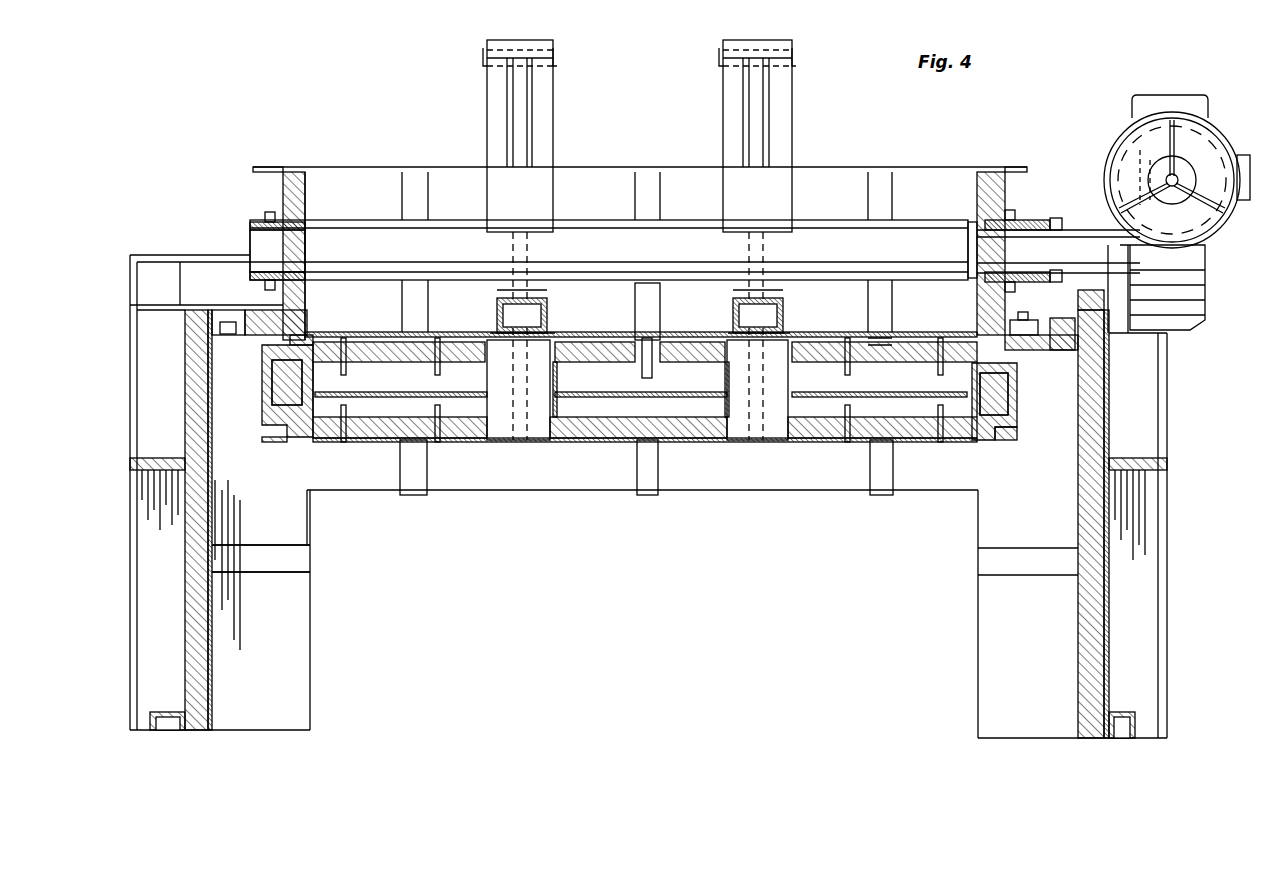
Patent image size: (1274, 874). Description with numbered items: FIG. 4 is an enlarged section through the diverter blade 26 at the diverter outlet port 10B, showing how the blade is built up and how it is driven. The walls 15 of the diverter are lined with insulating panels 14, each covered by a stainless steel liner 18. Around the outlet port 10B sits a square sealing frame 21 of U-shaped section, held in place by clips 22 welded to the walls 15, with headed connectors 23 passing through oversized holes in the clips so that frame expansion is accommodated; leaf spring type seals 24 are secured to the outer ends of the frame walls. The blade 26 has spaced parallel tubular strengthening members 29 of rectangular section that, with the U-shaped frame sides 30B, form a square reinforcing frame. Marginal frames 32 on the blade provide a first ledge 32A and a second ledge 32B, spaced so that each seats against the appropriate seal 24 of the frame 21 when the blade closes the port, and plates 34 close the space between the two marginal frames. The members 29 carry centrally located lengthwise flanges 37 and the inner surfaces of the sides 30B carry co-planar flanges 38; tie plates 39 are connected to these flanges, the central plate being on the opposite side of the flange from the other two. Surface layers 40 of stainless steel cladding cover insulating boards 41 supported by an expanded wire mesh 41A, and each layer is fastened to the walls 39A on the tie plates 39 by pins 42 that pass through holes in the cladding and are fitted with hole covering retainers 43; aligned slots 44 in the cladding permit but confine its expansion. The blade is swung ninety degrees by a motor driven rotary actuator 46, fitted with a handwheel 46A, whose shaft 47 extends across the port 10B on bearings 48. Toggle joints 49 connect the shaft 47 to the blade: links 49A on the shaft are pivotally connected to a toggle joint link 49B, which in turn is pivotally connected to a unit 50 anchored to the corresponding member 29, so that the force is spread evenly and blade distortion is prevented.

The diverter outlet port 10B is at (372, 170).
The panels 14 is at (1088, 600).
The walls 15 is at (1108, 620).
The stainless steel liner 18 is at (1076, 640).
The sealing frame 21 is at (205, 362).
The clips 22 is at (218, 318).
The headed connectors 23 is at (228, 322).
The leaf spring type seals 24 is at (1018, 340).
The blade 26 is at (615, 448).
The tubular strengthening members 29 is at (515, 444).
The frame sides 30B is at (322, 442).
The marginal frames 32 is at (975, 332).
The first ledge 32A is at (310, 333).
The second ledge 32B is at (268, 350).
The plates 34 is at (268, 398).
The lengthwise flanges 37 is at (475, 442).
The co-planar flanges 38 is at (330, 442).
The tie plates 39 is at (895, 390).
The walls 39A is at (395, 375).
The surface layers 40 is at (622, 345).
The insulating boards 41 is at (568, 345).
The expanded wire mesh 41A is at (680, 345).
The pins 42 is at (822, 345).
The retainers 43 is at (870, 340).
The slots 44 is at (452, 340).
The rotary actuator 46 is at (1112, 112).
The handwheel knob 46A is at (1243, 205).
The shaft 47 is at (845, 225).
The bearings 48 is at (262, 222).
The toggle joints 49 is at (556, 80).
The links 49A is at (520, 100).
The toggle joint link 49B is at (527, 145).
The unit 50 is at (548, 320).